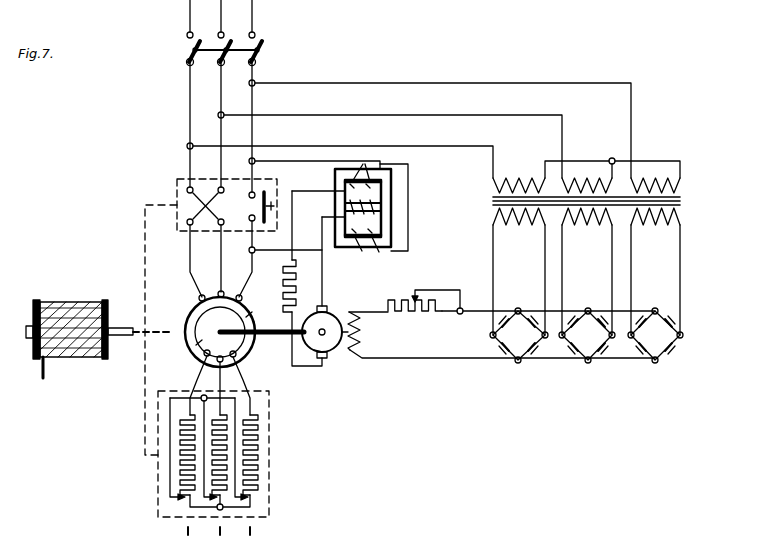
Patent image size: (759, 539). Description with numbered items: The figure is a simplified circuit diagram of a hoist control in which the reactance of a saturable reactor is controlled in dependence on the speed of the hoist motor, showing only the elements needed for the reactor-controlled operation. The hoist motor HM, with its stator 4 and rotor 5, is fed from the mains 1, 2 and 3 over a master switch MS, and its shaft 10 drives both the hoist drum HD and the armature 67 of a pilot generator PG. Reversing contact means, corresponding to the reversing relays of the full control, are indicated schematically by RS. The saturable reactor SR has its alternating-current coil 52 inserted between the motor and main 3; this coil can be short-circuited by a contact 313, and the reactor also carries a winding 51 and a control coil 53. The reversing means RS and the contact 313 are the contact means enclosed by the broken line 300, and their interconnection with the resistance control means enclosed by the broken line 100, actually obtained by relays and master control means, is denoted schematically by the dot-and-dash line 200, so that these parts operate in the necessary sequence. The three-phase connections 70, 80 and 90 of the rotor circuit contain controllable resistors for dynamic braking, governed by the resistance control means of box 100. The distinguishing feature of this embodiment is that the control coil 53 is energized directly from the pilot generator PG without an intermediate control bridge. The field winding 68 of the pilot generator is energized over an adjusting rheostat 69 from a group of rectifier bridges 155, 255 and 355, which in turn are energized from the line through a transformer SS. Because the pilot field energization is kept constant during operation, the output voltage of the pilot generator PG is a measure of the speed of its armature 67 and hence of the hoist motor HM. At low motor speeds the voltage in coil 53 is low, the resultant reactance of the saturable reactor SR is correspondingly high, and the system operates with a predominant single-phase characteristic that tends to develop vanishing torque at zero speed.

The main 1 is at (191, 13).
The main 2 is at (222, 13).
The main 3 is at (253, 13).
The master switch MS is at (168, 55).
The broken line 300 is at (177, 181).
The reversing contact means RS is at (204, 231).
The contact 313 is at (262, 205).
The dot-and-dash line 200 is at (143, 255).
The saturable reactor SR is at (432, 217).
The primary winding 51 is at (334, 181).
The alternating-current coil 52 is at (381, 253).
The control coil 53 is at (335, 213).
The hoist drum HD is at (80, 295).
The hoist motor HM is at (194, 306).
The motor stator 4 is at (256, 313).
The motor rotor 5 is at (196, 345).
The shaft 10 is at (274, 337).
The pilot generator PG is at (352, 381).
The armature 67 is at (321, 349).
The field winding 68 is at (362, 330).
The adjustable resistor 69 is at (415, 314).
The transformer SS is at (718, 199).
The rectifier bridge 155 is at (515, 364).
The rectifier bridge 255 is at (592, 364).
The rectifier bridge 355 is at (668, 358).
The broken line 100 is at (158, 478).
The three-phase connection 70 is at (182, 396).
The rotor resistor 80 is at (219, 396).
The three-phase connection 90 is at (252, 394).